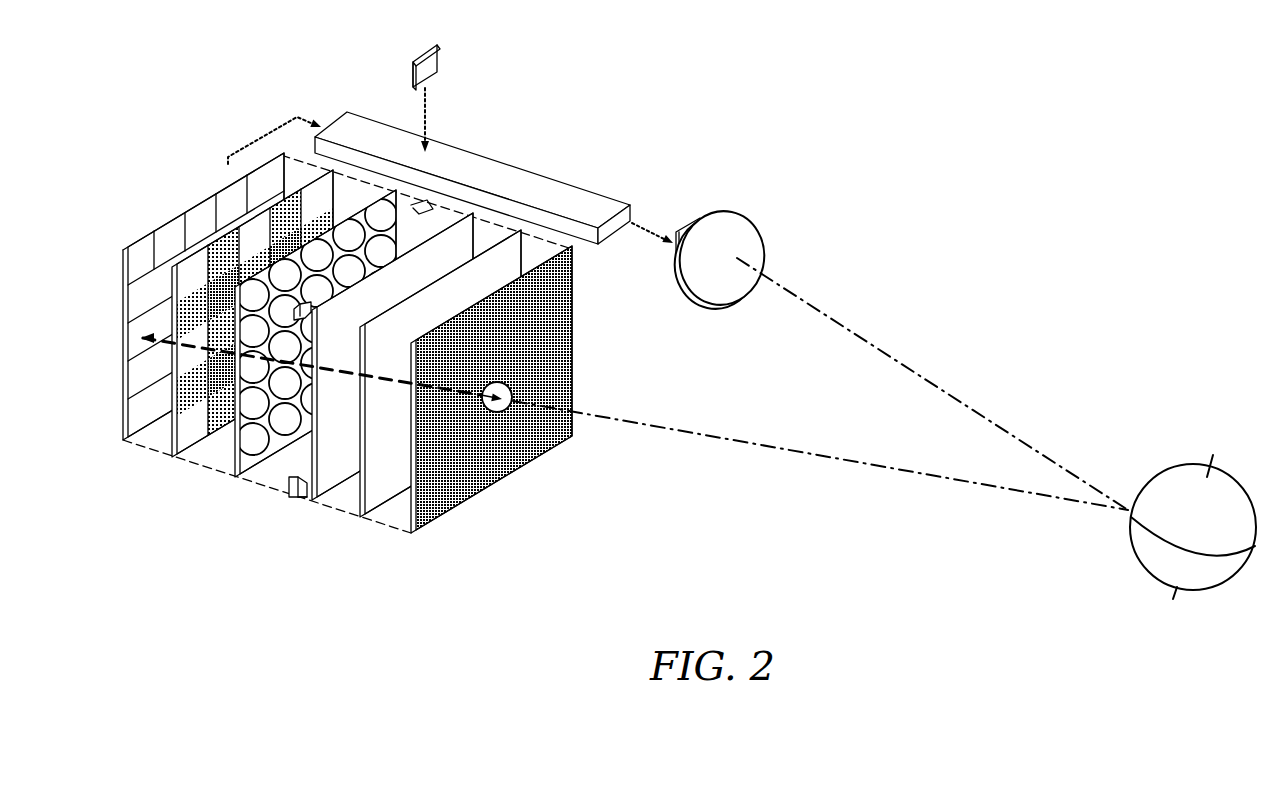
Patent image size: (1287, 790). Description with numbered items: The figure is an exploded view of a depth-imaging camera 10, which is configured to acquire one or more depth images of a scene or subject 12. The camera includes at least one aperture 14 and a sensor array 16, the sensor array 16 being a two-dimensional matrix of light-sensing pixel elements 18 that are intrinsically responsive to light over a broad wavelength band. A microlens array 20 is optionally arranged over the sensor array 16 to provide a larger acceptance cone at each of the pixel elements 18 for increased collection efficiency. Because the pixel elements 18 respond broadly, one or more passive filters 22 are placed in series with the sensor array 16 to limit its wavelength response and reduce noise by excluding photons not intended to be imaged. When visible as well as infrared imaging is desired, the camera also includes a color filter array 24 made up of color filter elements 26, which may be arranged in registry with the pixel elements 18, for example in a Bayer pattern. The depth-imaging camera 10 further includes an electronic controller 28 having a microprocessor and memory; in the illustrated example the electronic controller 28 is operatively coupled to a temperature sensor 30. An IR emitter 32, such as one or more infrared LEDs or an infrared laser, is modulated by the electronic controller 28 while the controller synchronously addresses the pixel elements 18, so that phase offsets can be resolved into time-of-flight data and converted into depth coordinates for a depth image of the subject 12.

The depth-imaging camera 10 is at (96, 166).
The scene or subject 12 is at (1237, 538).
The aperture 14 is at (482, 400).
The sensor array 16 is at (121, 350).
The pixel elements 18 is at (154, 307).
The microlens array 20 is at (232, 452).
The passive filters 22 is at (346, 473).
The color filter array 24 is at (163, 435).
The color filter elements 26 is at (263, 247).
The electronic controller 28 is at (407, 150).
The temperature sensor 30 is at (439, 57).
The IR emitter 32 is at (676, 257).